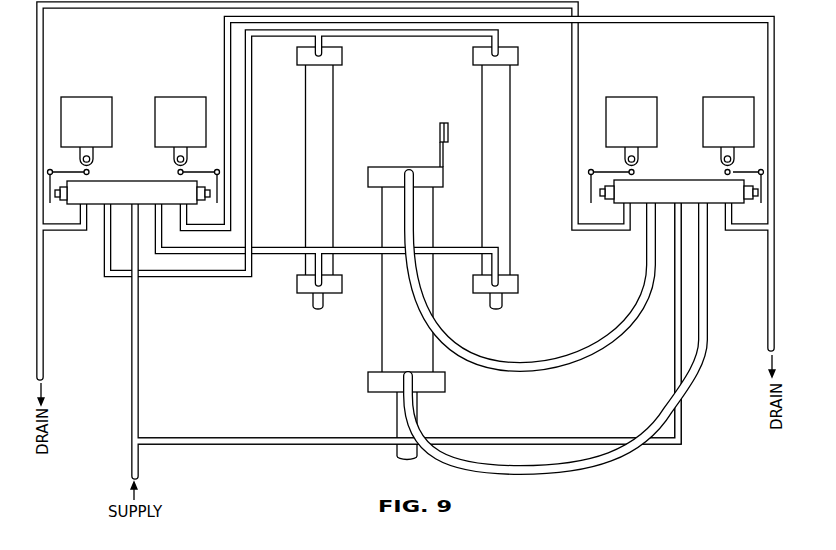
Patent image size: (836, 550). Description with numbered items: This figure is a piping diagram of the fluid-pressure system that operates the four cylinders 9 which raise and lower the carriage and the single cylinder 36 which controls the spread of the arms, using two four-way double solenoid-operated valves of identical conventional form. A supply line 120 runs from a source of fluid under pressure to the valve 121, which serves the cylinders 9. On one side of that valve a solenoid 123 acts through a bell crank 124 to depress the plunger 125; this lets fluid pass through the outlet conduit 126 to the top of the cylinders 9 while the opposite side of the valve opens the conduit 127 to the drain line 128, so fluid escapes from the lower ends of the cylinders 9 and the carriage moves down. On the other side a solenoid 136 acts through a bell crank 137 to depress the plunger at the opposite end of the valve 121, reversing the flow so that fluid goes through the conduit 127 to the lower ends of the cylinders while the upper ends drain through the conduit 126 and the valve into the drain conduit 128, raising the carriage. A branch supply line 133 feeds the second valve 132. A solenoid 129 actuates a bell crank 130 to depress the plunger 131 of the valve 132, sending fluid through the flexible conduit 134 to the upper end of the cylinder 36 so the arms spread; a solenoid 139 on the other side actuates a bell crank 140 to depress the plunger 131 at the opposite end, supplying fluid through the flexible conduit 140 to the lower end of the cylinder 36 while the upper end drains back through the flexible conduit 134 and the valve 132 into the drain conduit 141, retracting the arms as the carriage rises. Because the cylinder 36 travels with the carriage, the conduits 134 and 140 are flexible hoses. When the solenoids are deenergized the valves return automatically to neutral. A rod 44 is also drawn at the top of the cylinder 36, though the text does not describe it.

The cylinders 9 is at (323, 143).
The cylinder 36 is at (390, 327).
The rod 44 is at (440, 137).
The supply line 120 is at (381, 339).
The valve 121 is at (132, 206).
The solenoid 123 is at (93, 108).
The bell crank 124 is at (50, 169).
The plunger 125 is at (62, 198).
The outlet conduit 126 is at (425, 33).
The conduit 127 is at (283, 255).
The drain line 128 is at (227, 122).
The solenoid 129 is at (631, 107).
The bell crank 130 is at (609, 167).
The plunger 131 is at (602, 197).
The valve 132 is at (667, 196).
The branch supply line 133 is at (545, 443).
The flexible conduit 134 is at (563, 373).
The solenoid 136 is at (183, 108).
The bell crank 137 is at (202, 168).
The solenoid 139 is at (716, 107).
The flexible conduit 140 is at (568, 475).
The drain conduit 141 is at (575, 70).